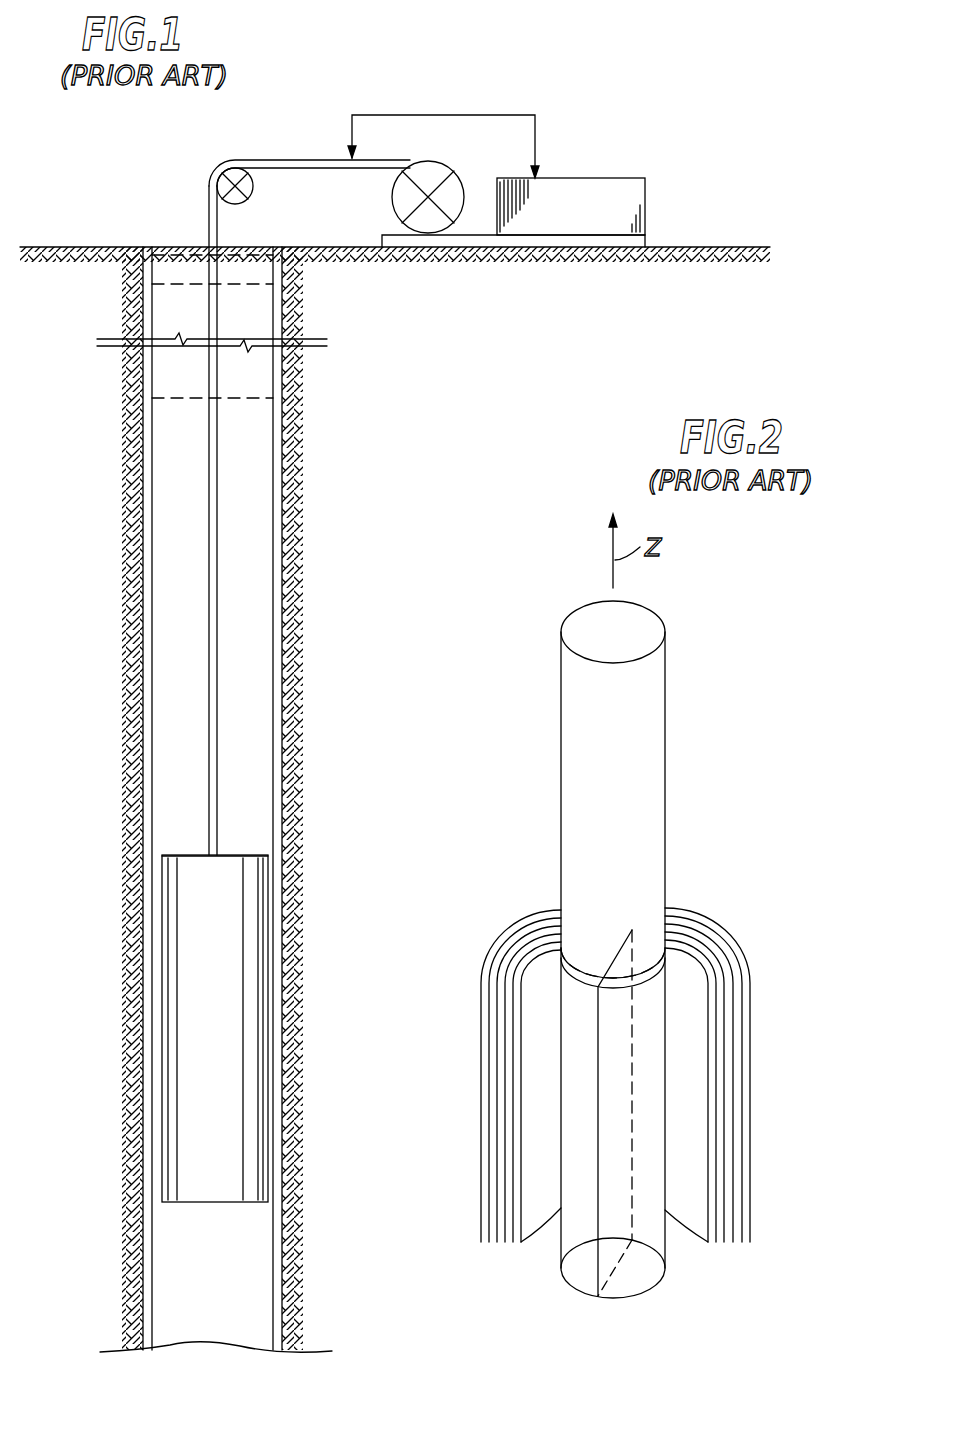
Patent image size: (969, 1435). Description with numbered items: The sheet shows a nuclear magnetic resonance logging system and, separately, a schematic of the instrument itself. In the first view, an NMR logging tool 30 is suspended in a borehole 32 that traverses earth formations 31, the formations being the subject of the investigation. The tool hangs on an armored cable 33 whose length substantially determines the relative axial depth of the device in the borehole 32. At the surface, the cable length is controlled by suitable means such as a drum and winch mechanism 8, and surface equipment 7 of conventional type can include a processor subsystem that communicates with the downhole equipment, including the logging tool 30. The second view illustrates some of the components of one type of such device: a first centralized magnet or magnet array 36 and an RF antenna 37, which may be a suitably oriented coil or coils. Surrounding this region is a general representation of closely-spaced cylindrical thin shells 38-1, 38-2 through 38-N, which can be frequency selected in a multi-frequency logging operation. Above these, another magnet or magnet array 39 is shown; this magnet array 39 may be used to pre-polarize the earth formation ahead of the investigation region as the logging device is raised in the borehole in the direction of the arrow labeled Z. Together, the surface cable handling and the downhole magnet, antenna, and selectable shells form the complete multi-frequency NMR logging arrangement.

In FIG. 1, the surface equipment 7 is at (600, 197).
In FIG. 1, the drum and winch mechanism 8 is at (442, 162).
In FIG. 1, the nuclear magnetic resonance logging tool 30 is at (172, 850).
In FIG. 1, the earth formations 31 is at (70, 246).
In FIG. 1, the borehole 32 is at (171, 266).
In FIG. 1, the armored cable 33 is at (203, 243).
In FIG. 2, the first centralized magnet or magnet array 36 is at (578, 1045).
In FIG. 2, the RF antenna 37 is at (598, 1147).
In FIG. 2, the cylindrical thin shell 38-1 is at (710, 1038).
In FIG. 2, the cylindrical thin shell 38-2 is at (717, 1080).
In FIG. 2, the cylindrical thin shell 38-N is at (753, 1135).
In FIG. 2, the magnet or magnet array 39 is at (647, 771).